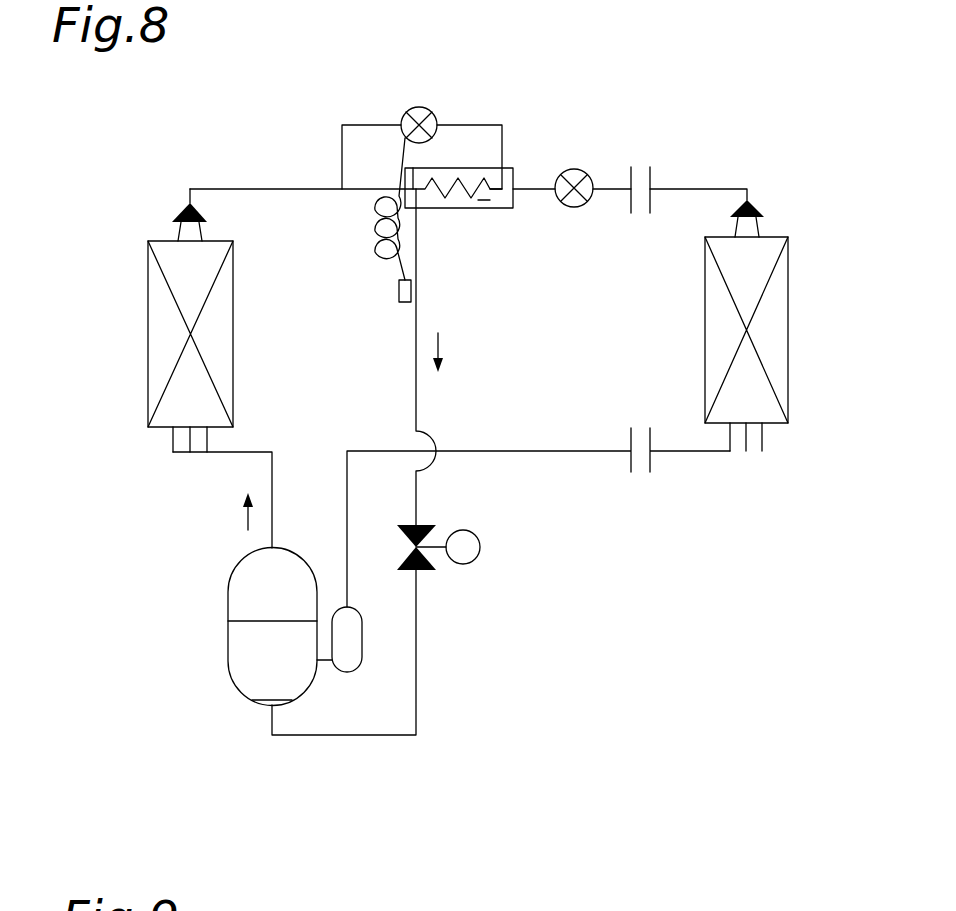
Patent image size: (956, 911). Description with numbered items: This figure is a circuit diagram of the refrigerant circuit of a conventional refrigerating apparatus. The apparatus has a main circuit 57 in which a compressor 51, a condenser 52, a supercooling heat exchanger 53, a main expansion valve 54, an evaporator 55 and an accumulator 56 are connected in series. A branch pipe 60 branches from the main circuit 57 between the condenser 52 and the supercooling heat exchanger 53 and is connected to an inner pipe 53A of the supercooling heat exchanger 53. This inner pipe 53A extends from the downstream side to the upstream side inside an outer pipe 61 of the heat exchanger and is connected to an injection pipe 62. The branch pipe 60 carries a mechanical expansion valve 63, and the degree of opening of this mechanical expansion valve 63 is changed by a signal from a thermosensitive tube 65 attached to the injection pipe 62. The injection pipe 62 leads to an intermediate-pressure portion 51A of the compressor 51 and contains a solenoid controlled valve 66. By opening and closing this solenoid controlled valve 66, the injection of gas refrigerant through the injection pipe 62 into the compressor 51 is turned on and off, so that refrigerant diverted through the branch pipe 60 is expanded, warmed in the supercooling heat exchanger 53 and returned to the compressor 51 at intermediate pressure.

The compressor 51 is at (228, 636).
The intermediate-pressure portion 51A is at (270, 706).
The condenser 52 is at (148, 308).
The supercooling heat exchanger 53 is at (513, 176).
The inner pipe 53A is at (478, 200).
The main expansion valve 54 is at (583, 172).
The evaporator 55 is at (788, 272).
The accumulator 56 is at (362, 636).
The main circuit 57 is at (259, 167).
The branch pipe 60 is at (364, 125).
The outer pipe 61 is at (472, 168).
The injection pipe 62 is at (417, 318).
The mechanical expansion valve 63 is at (426, 107).
The thermosensitive tube 65 is at (397, 290).
The solenoid controlled valve 66 is at (422, 522).